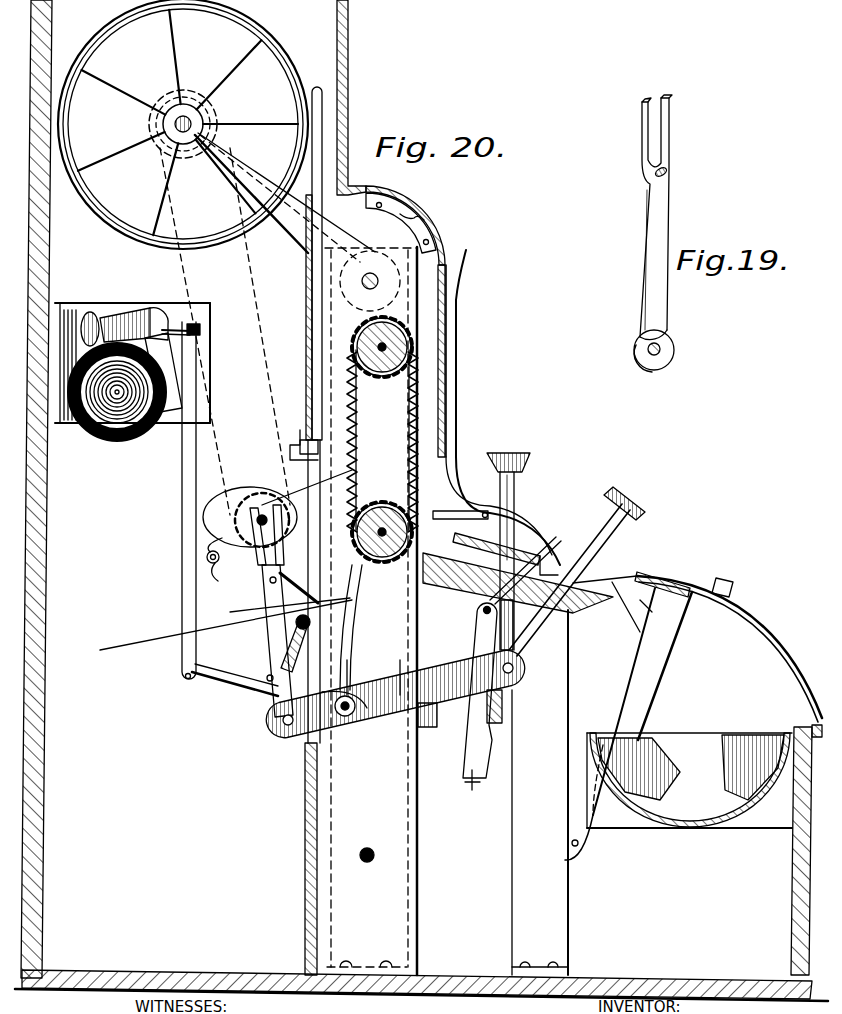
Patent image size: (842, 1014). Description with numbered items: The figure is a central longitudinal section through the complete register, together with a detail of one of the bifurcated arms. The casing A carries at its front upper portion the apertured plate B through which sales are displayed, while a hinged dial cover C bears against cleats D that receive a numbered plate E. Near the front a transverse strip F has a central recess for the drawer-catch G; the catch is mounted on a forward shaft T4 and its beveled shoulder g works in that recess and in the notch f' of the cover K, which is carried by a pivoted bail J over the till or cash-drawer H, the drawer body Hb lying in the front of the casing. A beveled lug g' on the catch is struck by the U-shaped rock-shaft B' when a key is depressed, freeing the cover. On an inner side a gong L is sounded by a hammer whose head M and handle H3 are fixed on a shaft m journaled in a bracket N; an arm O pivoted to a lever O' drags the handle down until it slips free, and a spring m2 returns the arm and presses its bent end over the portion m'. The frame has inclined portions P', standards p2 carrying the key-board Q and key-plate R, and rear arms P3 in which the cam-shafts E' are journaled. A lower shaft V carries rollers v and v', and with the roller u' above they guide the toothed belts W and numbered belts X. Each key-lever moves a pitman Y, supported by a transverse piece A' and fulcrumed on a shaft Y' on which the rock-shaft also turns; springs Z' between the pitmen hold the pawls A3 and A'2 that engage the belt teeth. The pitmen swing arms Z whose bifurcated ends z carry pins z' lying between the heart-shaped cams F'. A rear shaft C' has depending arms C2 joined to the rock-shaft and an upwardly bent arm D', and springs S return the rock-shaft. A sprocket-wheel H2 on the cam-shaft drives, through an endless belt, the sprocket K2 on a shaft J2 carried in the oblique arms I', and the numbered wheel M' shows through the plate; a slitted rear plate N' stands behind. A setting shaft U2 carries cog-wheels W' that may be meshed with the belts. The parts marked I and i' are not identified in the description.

In FIG. 20, the casing A is at (421, 500).
In FIG. 20, the transverse piece A' is at (339, 611).
In FIG. 20, the apertured plate B is at (357, 97).
In FIG. 20, the plate E is at (405, 213).
In FIG. 20, the cleats D is at (403, 213).
In FIG. 20, the cog-wheels W' is at (436, 326).
In FIG. 20, the hinged scale or dial cover C is at (503, 407).
In FIG. 20, the wheel M' is at (186, 124).
In FIG. 20, the sprocket-wheel K2 is at (214, 110).
In FIG. 20, the transverse shaft J2 is at (210, 138).
In FIG. 20, the arms I' is at (251, 200).
In FIG. 20, the arm or handle H3 is at (259, 324).
In FIG. 20, the gong L is at (122, 436).
In FIG. 20, the head M is at (134, 305).
In FIG. 20, the shaft m is at (128, 313).
In FIG. 20, the bracket N is at (133, 340).
In FIG. 20, the rear plate N' is at (208, 320).
In FIG. 20, the portion of hammer-handle m' is at (200, 341).
In FIG. 20, the arm O is at (175, 500).
In FIG. 20, the arms P3 is at (323, 146).
In FIG. 20, the inclined portions P' is at (297, 317).
In FIG. 20, the transverse shaft U2 is at (370, 281).
In FIG. 20, the key-plate R is at (303, 438).
In FIG. 20, the lower transverse shaft V is at (410, 340).
In FIG. 20, the grooved roller u' is at (422, 347).
In FIG. 20, the grooved roller v is at (382, 522).
In FIG. 20, the grooved roller v' is at (404, 521).
In FIG. 20, the endless belts X is at (358, 410).
In FIG. 20, the endless toothed belts W is at (451, 441).
In FIG. 20, the heart-shaped cams F' is at (223, 517).
In FIG. 20, the cam-shafts E' is at (255, 520).
In FIG. 20, the spring m2 is at (223, 565).
In FIG. 20, the pitman Y is at (297, 634).
In FIG. 20, the sprocket-wheel H2 is at (307, 487).
In FIG. 20, the pivot pin i' is at (240, 599).
In FIG. 20, the arms Z is at (283, 594).
In FIG. 20, the downwardly-extending arms C2 is at (310, 634).
In FIG. 20, the pawl A3 is at (290, 609).
In FIG. 20, the upwardly-extending arm D' is at (205, 628).
In FIG. 20, the transverse shaft C' is at (170, 676).
In FIG. 20, the lever O' is at (239, 700).
In FIG. 20, the spring Z' is at (395, 686).
In FIG. 20, the transverse shaft Y' is at (344, 736).
In FIG. 20, the pawl A'2 is at (370, 630).
In FIG. 20, the U-shaped rock-shaft B' is at (460, 736).
In FIG. 20, the transverse forward shaft T4 is at (484, 611).
In FIG. 20, the beveled lug g' is at (471, 791).
In FIG. 20, the standards or uprights p2 is at (525, 832).
In FIG. 20, the spring S is at (526, 464).
In FIG. 20, the till or cash-drawer H is at (525, 540).
In FIG. 20, the key-board Q is at (555, 560).
In FIG. 20, the transverse strip F is at (534, 571).
In FIG. 20, the notch f' is at (631, 564).
In FIG. 20, the cover K is at (729, 631).
In FIG. 20, the beveled shoulder g is at (653, 606).
In FIG. 20, the drawer-catch G is at (636, 614).
In FIG. 20, the bail J is at (642, 701).
In FIG. 20, the hook I is at (589, 805).
In FIG. 20, the till or cash-drawer Hb is at (689, 780).
In FIG. 19, the bifurcated end z is at (670, 233).
In FIG. 19, the lateral studs or pins z' is at (692, 174).